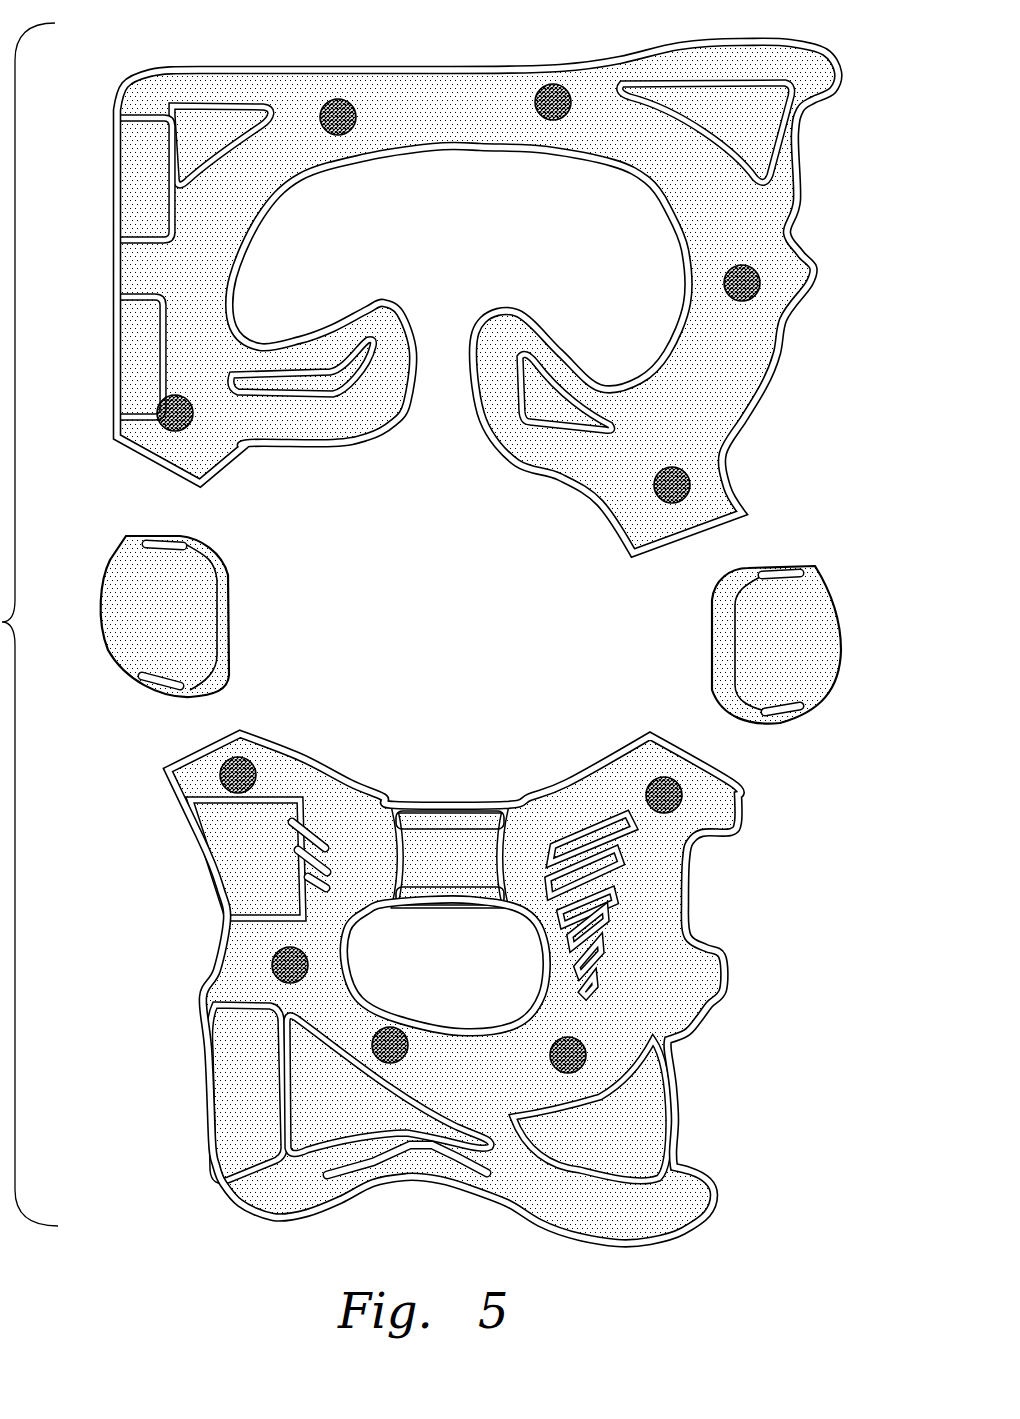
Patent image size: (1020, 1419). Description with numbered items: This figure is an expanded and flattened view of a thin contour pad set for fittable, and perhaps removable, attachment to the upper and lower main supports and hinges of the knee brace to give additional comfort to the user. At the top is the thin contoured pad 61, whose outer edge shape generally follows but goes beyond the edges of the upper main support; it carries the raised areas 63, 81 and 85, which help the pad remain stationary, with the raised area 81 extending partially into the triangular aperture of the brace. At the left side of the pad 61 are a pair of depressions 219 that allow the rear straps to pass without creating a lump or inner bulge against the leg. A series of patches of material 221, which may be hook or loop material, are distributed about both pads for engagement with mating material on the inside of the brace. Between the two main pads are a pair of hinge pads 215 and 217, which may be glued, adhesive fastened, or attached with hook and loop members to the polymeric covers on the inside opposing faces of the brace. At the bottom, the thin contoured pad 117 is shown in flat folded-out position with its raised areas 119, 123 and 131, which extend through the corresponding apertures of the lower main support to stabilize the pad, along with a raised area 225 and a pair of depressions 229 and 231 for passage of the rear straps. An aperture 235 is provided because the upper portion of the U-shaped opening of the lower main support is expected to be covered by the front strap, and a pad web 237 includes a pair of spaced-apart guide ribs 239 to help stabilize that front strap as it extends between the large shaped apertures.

The thin contoured pad 61 is at (440, 276).
The raised area 63 is at (552, 410).
The raised area 81 is at (345, 385).
The raised area 85 is at (748, 90).
The thin contoured pad 117 is at (447, 989).
The raised area 119 is at (650, 1118).
The raised area 123 is at (312, 1128).
The raised area 131 is at (583, 853).
The hinge pad 215 is at (192, 617).
The hinge pad 217 is at (752, 656).
The depressions 219 is at (208, 115).
The patches of material 221 is at (340, 122).
The raised area 225 is at (316, 830).
The depression 229 is at (222, 848).
The depression 231 is at (225, 1108).
The aperture 235 is at (493, 1002).
The pad web 237 is at (461, 834).
The guide ribs 239 is at (498, 822).